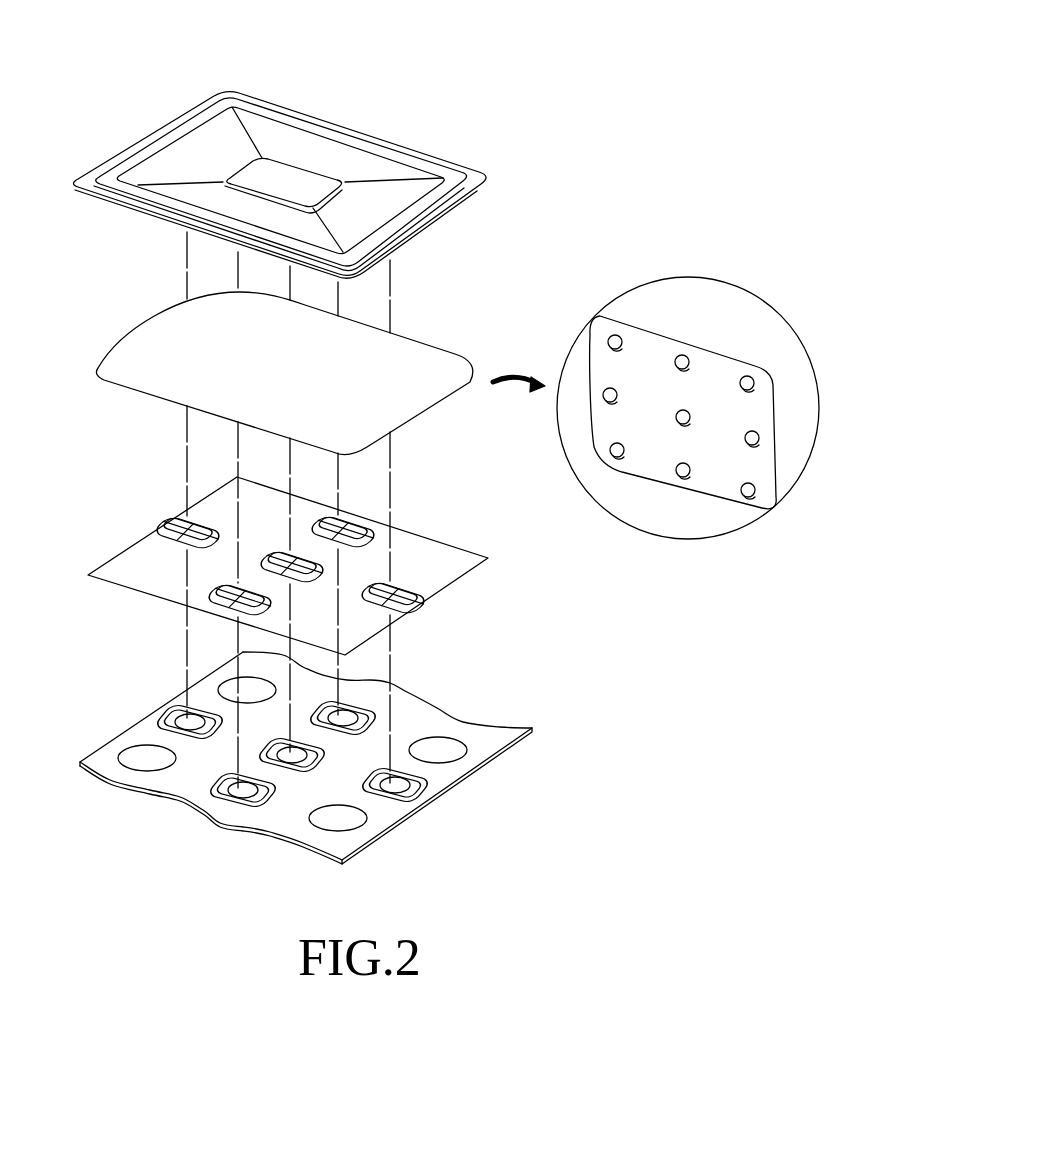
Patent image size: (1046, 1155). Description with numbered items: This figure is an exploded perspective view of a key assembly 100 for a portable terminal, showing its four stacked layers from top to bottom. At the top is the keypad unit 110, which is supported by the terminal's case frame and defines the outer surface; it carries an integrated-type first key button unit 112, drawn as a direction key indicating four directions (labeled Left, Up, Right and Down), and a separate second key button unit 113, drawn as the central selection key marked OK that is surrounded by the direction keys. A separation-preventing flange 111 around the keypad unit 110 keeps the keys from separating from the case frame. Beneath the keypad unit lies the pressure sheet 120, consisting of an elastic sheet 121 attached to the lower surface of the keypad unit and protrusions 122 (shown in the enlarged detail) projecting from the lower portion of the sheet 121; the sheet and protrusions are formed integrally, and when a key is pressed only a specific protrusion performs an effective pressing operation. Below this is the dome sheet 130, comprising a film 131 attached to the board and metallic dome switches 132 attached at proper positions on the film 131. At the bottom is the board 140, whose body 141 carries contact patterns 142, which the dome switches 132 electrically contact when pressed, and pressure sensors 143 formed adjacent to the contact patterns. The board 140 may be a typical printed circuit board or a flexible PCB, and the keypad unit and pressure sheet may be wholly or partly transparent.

The key assembly 100 is at (118, 64).
The keypad unit 110 is at (471, 139).
The separation-preventing flange 111 is at (478, 189).
The first key button unit 112 is at (215, 122).
The second key button unit 113 is at (272, 160).
The pressure sheet 120 is at (483, 345).
The sheet 121 is at (400, 347).
The protrusion 122 is at (680, 358).
The dome sheet 130 is at (456, 507).
The film 131 is at (465, 562).
The dome switch 132 is at (343, 523).
The board 140 is at (483, 690).
The board body 141 is at (450, 777).
The contact pattern 142 is at (225, 798).
The pressure sensor 143 is at (355, 823).